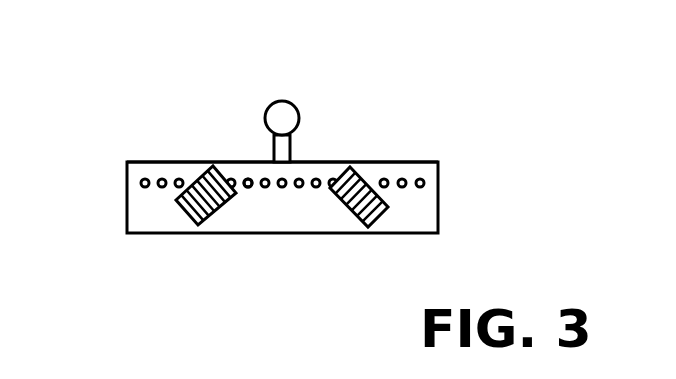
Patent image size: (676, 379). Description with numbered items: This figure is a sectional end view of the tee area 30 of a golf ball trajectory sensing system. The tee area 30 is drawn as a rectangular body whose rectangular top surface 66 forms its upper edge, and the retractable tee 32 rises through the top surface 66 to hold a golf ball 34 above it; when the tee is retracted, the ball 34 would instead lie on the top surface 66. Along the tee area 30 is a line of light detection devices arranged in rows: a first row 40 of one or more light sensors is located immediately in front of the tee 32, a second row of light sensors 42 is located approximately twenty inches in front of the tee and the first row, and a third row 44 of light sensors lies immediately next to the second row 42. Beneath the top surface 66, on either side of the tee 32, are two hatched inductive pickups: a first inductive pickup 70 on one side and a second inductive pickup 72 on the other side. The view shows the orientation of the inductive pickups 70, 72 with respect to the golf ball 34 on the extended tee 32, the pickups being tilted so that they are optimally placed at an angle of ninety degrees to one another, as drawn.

The tee area 30 is at (124, 167).
The retractable tee 32 is at (291, 146).
The golf ball 34 is at (291, 103).
The first row of light sensors 40 is at (249, 179).
The second row of light sensors 42 is at (356, 183).
The third row of light sensors 44 is at (425, 183).
The top surface 66 is at (410, 162).
The first inductive pickup 70 is at (352, 213).
The second inductive pickup 72 is at (222, 206).